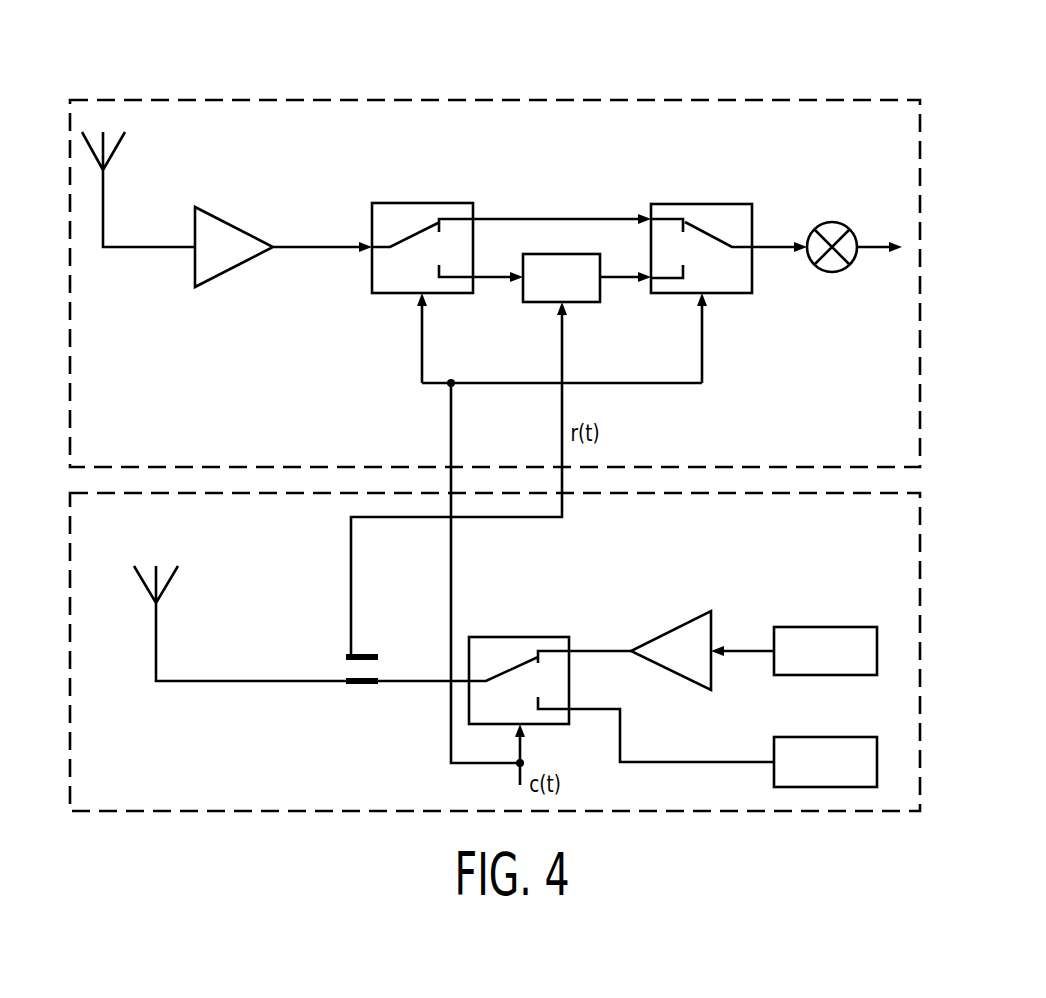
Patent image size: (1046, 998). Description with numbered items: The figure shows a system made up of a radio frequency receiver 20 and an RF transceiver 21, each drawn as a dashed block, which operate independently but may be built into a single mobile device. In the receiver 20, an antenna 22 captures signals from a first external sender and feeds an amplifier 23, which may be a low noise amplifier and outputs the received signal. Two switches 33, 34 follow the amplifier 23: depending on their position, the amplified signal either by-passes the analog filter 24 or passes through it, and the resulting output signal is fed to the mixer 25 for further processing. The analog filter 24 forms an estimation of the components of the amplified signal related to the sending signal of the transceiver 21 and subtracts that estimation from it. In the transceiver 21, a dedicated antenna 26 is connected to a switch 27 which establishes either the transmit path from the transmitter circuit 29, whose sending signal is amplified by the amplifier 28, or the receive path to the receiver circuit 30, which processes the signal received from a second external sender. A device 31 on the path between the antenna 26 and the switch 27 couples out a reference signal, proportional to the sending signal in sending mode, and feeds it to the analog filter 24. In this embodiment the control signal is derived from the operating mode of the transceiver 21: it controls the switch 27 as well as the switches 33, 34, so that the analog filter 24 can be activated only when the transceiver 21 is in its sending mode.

The radio frequency receiver 20 is at (776, 100).
The RF transceiver 21 is at (183, 811).
The antenna 22 is at (103, 208).
The amplifier 23 is at (233, 216).
The analog filter 24 is at (588, 302).
The mixer 25 is at (832, 222).
The antenna 26 is at (156, 642).
The switch 27 is at (519, 637).
The amplifier 28 is at (670, 623).
The transmitter circuit 29 is at (822, 627).
The receiver circuit 30 is at (822, 737).
The coupling device 31 is at (370, 655).
The switch 33 is at (421, 203).
The switch 34 is at (703, 204).